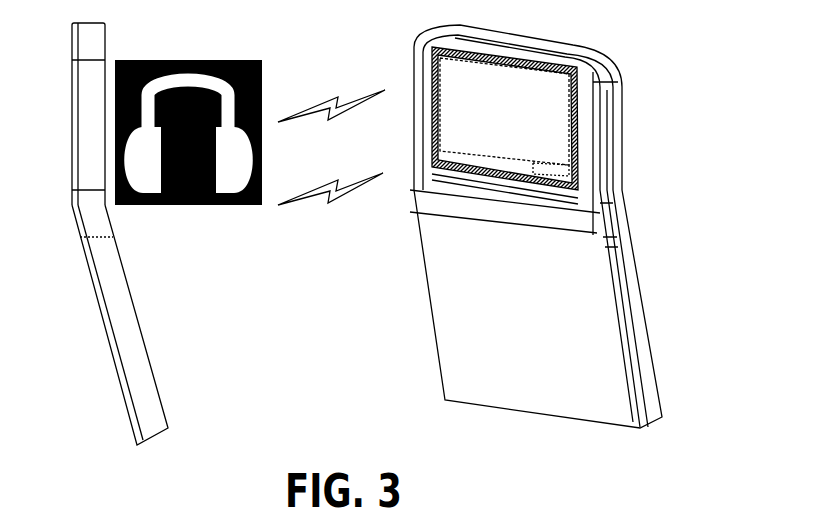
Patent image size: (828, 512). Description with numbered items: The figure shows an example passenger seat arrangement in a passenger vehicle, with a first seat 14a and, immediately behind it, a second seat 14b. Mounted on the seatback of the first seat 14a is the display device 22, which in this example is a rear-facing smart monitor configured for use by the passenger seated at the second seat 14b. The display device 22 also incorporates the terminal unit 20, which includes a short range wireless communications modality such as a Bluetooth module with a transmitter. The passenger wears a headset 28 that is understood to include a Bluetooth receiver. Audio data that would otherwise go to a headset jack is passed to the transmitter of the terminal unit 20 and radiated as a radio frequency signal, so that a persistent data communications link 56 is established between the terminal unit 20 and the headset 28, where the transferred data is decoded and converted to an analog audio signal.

The first seat 14a is at (622, 167).
The second seat 14b is at (113, 282).
The terminal unit 20 is at (580, 133).
The display device 22 is at (574, 117).
The headset 28 is at (187, 60).
The data communications link 56 is at (343, 161).